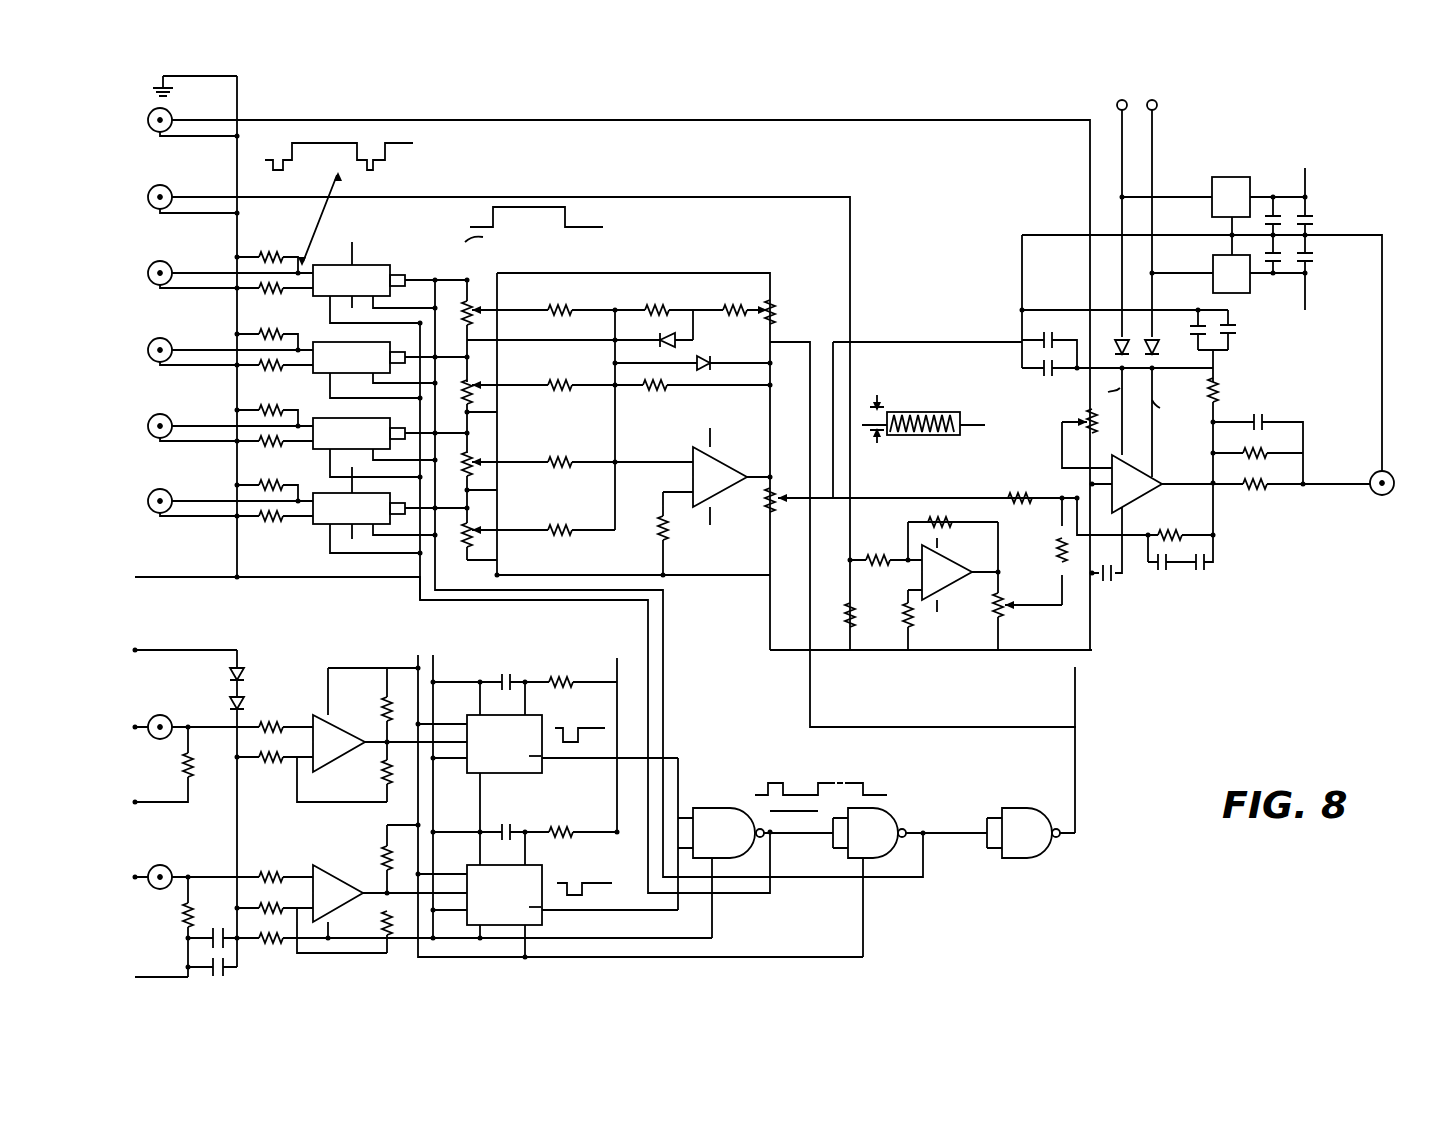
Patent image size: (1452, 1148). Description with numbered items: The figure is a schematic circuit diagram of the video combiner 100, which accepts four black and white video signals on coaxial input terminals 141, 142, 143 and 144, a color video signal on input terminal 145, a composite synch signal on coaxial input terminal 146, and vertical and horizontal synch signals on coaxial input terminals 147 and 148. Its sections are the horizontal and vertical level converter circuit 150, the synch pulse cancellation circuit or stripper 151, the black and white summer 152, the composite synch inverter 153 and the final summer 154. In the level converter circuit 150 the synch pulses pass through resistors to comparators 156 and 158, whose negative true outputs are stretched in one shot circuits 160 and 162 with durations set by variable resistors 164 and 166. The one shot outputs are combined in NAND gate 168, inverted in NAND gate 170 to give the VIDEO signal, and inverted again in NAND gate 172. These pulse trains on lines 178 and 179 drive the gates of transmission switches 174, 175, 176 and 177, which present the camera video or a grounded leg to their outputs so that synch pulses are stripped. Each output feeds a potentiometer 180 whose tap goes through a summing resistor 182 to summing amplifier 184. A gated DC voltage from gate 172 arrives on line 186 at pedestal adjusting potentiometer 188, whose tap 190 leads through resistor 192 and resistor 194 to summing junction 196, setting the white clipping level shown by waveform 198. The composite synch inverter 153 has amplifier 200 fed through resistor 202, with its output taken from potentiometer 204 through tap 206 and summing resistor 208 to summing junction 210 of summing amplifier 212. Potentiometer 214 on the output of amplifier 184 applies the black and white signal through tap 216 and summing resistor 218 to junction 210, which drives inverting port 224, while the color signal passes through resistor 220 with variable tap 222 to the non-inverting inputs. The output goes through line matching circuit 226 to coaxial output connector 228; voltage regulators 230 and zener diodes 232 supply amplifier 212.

The video combiner 100 is at (332, 88).
The coaxial input terminal 141 is at (158, 262).
The coaxial input terminal 142 is at (161, 338).
The coaxial input terminal 143 is at (161, 415).
The coaxial input terminal 144 is at (157, 501).
The input terminal 145 is at (163, 100).
The coaxial input terminal 146 is at (166, 185).
The coaxial input terminal 147 is at (151, 716).
The coaxial input terminal 148 is at (149, 868).
The horizontal and vertical level converter circuit 150 is at (498, 795).
The synch pulse cancellation circuit or stripper 151 is at (434, 204).
The black and white summer 152 is at (794, 438).
The composite synch inverter 153 is at (938, 478).
The final summer 154 is at (1202, 456).
The comparator 156 is at (351, 888).
The comparator 158 is at (351, 734).
The one shot circuit 160 is at (547, 896).
The one shot circuit 162 is at (547, 723).
The 10 K variable resistor 164 is at (564, 831).
The 10 K variable resistor 166 is at (560, 682).
The NAND gate 168 is at (782, 848).
The NAND gate 170 is at (910, 882).
The NAND gate 172 is at (1020, 852).
The CMOS transmission switch 174 is at (390, 274).
The CMOS transmission switch 175 is at (390, 370).
The CMOS transmission switch 176 is at (390, 455).
The CMOS transmission switch 177 is at (390, 524).
The line 178 is at (418, 600).
The line 179 is at (677, 613).
The 1 K potentiometer 180 is at (452, 280).
The 4.7 K summing resistor 182 is at (547, 313).
The summing amplifier 184 is at (701, 495).
The line 186 is at (808, 722).
The 10 K pedestal adjusting potentiometer 188 is at (770, 342).
The tap 190 is at (767, 313).
The 10 K resistor 192 is at (745, 313).
The 100 K resistor 194 is at (665, 313).
The summing junction 196 is at (620, 462).
The waveform 198 is at (935, 405).
The amplifier 200 is at (934, 577).
The 10 K resistor 202 is at (888, 562).
The 2 K potentiometer 204 is at (999, 573).
The tap 206 is at (1012, 612).
The 1 K summing resistor 208 is at (1059, 545).
The summing junction 210 is at (1072, 500).
The summing amplifier 212 is at (1152, 526).
The 2 K potentiometer 214 is at (770, 514).
The tap 216 is at (772, 492).
The 1 K summing resistor 218 is at (1006, 496).
The 100 ohm resistor 220 is at (1097, 420).
The variable tap 222 is at (1083, 422).
The inverting port 224 is at (1112, 501).
The line matching circuit 226 is at (1283, 492).
The coaxial output connector 228 is at (1378, 470).
The integrated circuit voltage regulators 230 is at (1222, 264).
The zener diodes 232 is at (1152, 357).